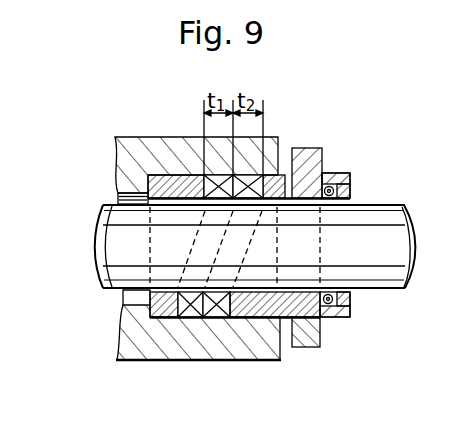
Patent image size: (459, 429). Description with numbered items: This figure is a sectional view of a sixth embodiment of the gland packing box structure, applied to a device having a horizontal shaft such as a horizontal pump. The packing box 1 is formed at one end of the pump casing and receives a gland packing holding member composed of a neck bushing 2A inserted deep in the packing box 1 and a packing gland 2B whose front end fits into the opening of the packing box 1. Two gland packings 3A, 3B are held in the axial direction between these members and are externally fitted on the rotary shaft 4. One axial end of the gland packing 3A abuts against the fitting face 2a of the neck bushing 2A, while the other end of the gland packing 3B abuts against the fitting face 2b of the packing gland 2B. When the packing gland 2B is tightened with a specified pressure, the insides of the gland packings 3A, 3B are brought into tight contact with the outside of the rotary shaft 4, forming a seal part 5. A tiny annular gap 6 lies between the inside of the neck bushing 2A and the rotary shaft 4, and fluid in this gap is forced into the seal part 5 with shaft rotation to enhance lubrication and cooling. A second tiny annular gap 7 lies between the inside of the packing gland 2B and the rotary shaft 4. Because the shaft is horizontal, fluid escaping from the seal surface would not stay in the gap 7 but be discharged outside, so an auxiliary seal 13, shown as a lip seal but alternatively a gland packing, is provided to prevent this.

The packing box 1 is at (147, 348).
The neck bushing 2A is at (170, 186).
The packing gland 2B is at (303, 148).
The fitting face 2a is at (186, 233).
The fitting face 2b is at (252, 221).
The gland packing 3A is at (193, 318).
The gland packing 3B is at (230, 318).
The rotary shaft 4 is at (120, 275).
The seal part 5 is at (253, 360).
The annular gap 6 is at (140, 205).
The annular gap 7 is at (316, 149).
The auxiliary seal 13 is at (353, 180).